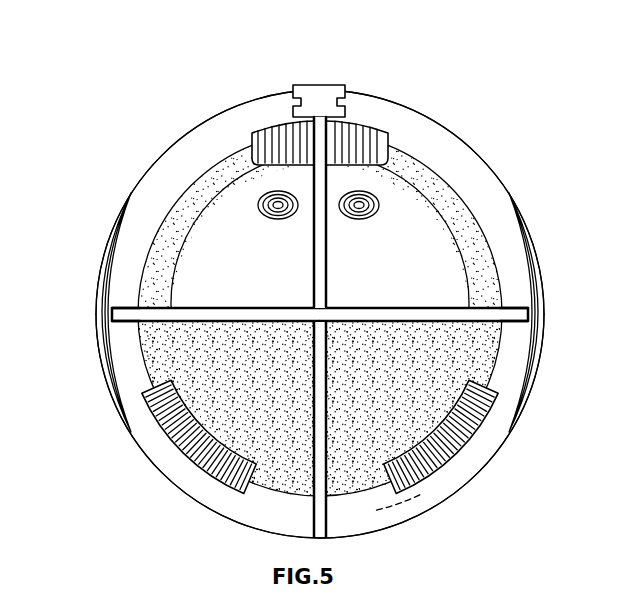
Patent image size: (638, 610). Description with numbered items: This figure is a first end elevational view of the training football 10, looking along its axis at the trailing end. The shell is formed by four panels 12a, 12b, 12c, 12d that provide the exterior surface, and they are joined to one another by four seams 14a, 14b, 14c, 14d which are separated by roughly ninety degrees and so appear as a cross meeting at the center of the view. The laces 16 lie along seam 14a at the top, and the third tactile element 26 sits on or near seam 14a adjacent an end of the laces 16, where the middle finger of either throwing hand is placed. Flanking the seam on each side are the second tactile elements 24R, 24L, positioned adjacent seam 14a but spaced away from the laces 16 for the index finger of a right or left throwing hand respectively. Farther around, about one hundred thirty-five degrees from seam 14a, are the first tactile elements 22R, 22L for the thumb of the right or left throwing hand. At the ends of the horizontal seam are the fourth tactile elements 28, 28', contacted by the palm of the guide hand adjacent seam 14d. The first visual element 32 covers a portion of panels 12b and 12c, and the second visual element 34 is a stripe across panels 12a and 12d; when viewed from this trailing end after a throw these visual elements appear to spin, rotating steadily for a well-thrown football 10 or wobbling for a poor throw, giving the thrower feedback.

The football 10 is at (144, 159).
The panel 12a is at (433, 140).
The panel 12b is at (433, 490).
The panel 12c is at (203, 489).
The panel 12d is at (204, 140).
The seam 14a is at (313, 290).
The seam 14b is at (406, 307).
The seam 14c is at (312, 510).
The seam 14d is at (220, 307).
The laces 16 is at (320, 84).
The first tactile element 22L is at (174, 448).
The first tactile element 22R is at (480, 450).
The second tactile element 24L is at (359, 212).
The second tactile element 24R is at (277, 212).
The third tactile element 26 is at (363, 128).
The fourth tactile element 28 is at (87, 320).
The fourth tactile element 28' is at (554, 315).
The first visual element 32 is at (480, 357).
The second visual element 34 is at (455, 215).